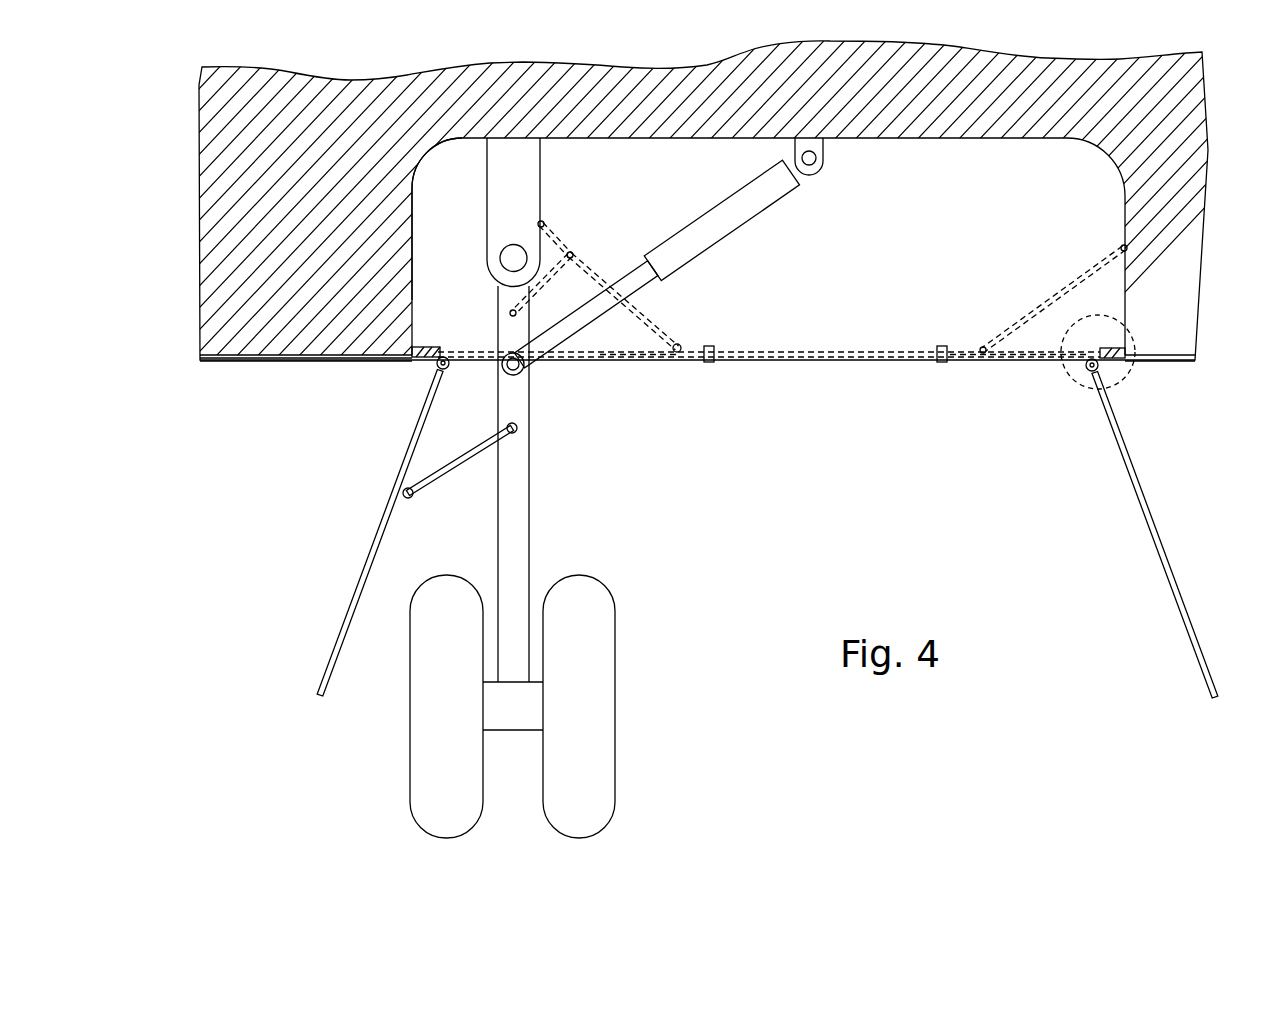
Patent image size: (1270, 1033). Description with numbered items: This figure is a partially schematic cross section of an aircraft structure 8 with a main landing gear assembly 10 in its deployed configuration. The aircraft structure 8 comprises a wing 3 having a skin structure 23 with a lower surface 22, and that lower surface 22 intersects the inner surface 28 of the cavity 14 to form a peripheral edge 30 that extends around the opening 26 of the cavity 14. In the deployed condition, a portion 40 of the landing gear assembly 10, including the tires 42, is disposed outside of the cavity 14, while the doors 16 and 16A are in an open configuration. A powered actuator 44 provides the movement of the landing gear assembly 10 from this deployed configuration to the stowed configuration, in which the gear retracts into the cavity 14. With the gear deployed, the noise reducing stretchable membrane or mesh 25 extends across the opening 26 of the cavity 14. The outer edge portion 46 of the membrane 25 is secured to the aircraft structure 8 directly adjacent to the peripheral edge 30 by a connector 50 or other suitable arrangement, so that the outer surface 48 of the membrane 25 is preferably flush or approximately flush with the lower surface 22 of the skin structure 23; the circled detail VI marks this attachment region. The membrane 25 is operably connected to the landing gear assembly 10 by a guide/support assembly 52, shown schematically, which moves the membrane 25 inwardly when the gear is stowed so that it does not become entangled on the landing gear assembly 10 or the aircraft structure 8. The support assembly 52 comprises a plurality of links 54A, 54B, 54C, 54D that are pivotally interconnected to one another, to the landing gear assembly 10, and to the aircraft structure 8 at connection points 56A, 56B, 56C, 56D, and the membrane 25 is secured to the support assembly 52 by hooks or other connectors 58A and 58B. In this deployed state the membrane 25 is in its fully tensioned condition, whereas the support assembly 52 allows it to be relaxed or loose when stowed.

The wing 3 is at (310, 358).
The aircraft structure 8 is at (268, 363).
The main landing gear assembly 10 is at (517, 488).
The cavity 14 is at (844, 245).
The door 16 is at (345, 613).
The door 16A is at (1170, 568).
The lower surface 22 is at (353, 358).
The skin structure 23 is at (222, 358).
The membrane 25 is at (635, 362).
The opening 26 is at (988, 362).
The inner surface 28 is at (413, 272).
The peripheral edge 30 is at (435, 407).
The portion of landing gear 40 is at (529, 575).
The tires 42 is at (615, 665).
The powered actuator 44 is at (669, 284).
The outer edge portion 46 is at (453, 367).
The outer surface 48 is at (603, 362).
The connector 50 is at (443, 353).
The guide/support assembly 52 is at (776, 256).
The link 54A is at (592, 273).
The link 54B is at (552, 265).
The link 54C is at (832, 352).
The link 54D is at (1047, 302).
The connection point 56A is at (541, 224).
The connection point 56B is at (513, 313).
The connection point 56C is at (680, 347).
The connection point 56D is at (1124, 248).
The connector 58A is at (712, 365).
The connector 58B is at (944, 363).
The detail view circle VI is at (1127, 380).